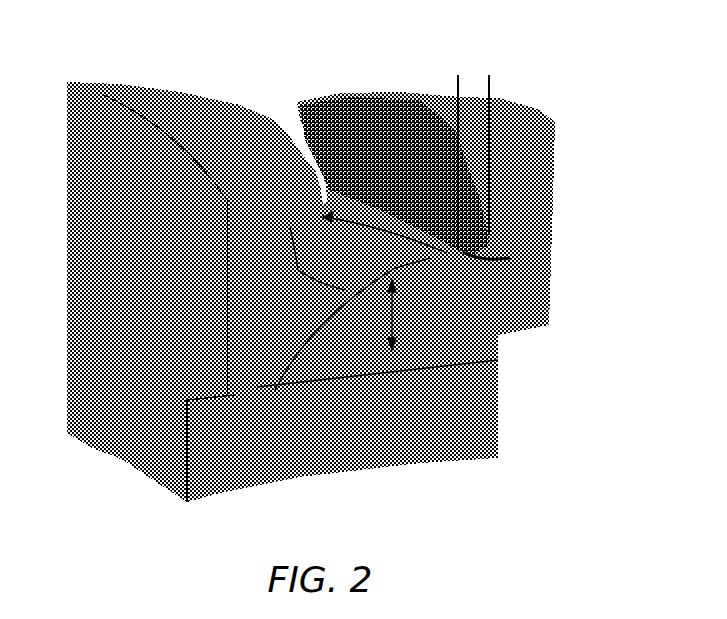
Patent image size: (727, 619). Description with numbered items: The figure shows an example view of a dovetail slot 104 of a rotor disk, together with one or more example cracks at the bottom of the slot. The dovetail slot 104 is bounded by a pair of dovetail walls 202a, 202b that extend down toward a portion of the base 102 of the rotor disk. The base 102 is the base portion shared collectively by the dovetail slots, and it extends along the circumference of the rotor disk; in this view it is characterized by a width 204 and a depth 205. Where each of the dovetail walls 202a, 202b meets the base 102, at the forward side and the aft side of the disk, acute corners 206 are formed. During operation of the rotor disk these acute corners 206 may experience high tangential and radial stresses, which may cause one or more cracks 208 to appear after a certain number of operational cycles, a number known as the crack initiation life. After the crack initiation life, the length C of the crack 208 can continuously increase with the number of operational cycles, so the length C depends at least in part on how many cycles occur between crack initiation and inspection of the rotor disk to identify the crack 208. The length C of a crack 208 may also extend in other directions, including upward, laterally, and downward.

The dovetail slot 104 is at (247, 97).
The base 102 is at (290, 227).
The dovetail wall 202a is at (335, 175).
The dovetail wall 202b is at (398, 125).
The length of the crack C is at (407, 83).
The crack 208 is at (480, 250).
The acute corner 206 is at (460, 265).
The width 204 is at (393, 307).
The depth 205 is at (275, 390).